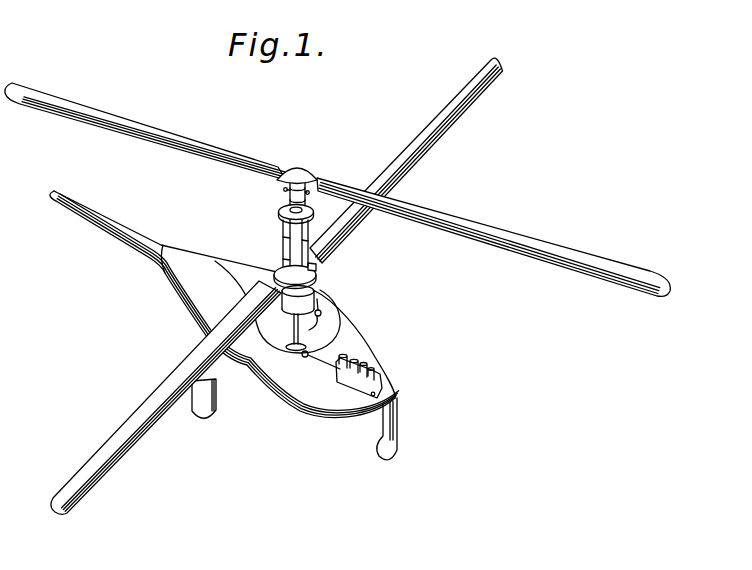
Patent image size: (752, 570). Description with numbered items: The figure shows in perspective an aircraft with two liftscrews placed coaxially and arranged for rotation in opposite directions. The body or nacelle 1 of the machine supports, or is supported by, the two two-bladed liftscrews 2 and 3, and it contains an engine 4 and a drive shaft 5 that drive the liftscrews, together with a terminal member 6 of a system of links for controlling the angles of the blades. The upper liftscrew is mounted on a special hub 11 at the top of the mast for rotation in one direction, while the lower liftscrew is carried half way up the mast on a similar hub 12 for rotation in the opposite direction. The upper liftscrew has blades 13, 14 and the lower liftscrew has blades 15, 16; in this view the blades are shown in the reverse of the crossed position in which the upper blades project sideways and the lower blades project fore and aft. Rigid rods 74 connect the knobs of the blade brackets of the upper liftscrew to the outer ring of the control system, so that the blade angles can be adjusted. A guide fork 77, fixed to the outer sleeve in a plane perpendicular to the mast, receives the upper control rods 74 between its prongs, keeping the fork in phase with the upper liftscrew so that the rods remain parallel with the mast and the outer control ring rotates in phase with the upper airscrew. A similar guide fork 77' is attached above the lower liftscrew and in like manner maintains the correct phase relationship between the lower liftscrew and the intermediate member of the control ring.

The body or nacelle 1 is at (351, 344).
The two-bladed liftscrew 2 is at (317, 272).
The two-bladed liftscrew 3 is at (308, 171).
The engine 4 is at (362, 383).
The drive shaft 5 is at (330, 323).
The terminal member 6 is at (310, 329).
The hub 11 is at (287, 181).
The hub 12 is at (281, 266).
The blade 13 is at (146, 128).
The blade 14 is at (525, 242).
The blade 15 is at (143, 407).
The blade 16 is at (444, 128).
The rigid rods 74 is at (283, 230).
The guide fork 77 is at (267, 207).
The guide fork 77' is at (327, 207).